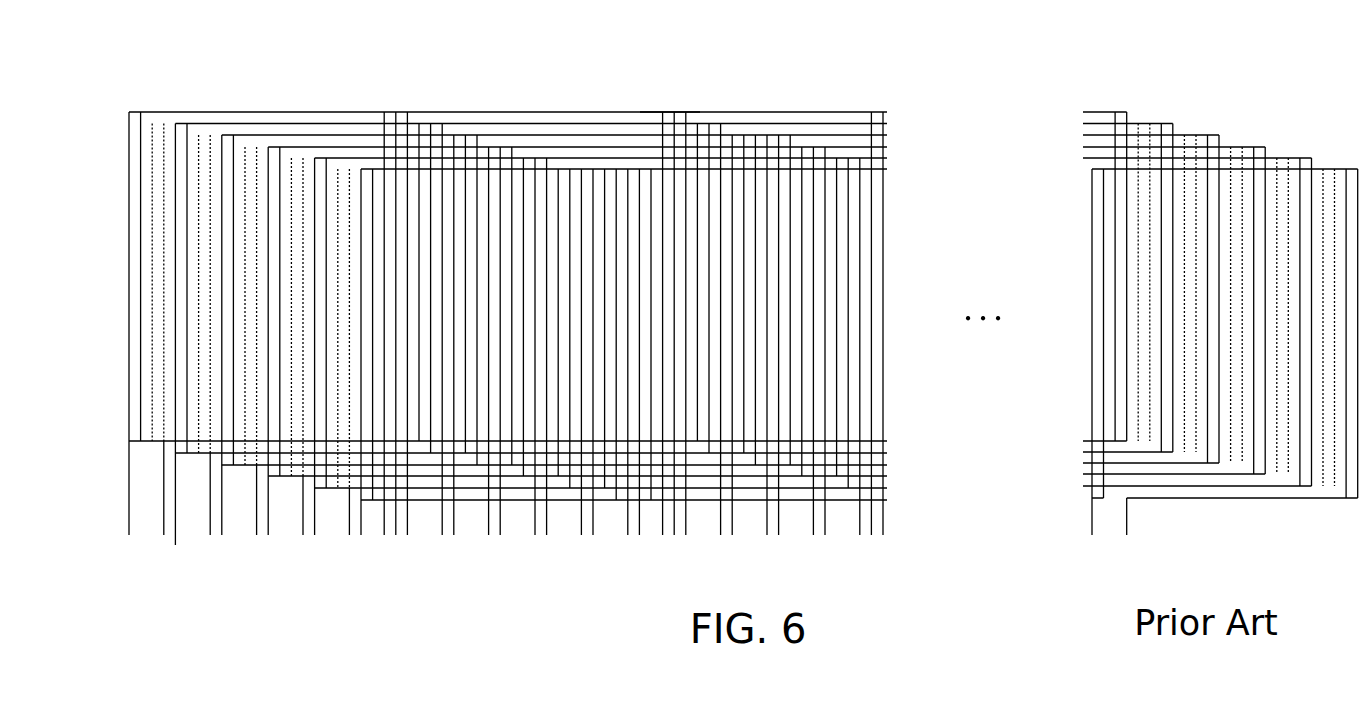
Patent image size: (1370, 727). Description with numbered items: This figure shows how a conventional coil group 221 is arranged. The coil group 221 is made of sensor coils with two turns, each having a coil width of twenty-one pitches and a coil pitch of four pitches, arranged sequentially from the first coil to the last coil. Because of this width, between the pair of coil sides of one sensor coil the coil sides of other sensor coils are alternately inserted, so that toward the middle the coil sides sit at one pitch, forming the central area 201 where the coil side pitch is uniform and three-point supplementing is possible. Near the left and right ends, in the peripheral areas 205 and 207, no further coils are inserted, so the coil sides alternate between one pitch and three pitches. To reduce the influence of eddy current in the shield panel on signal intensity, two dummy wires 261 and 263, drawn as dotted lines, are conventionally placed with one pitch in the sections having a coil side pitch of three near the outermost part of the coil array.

The peripheral area 205 is at (129, 49).
The central area 201 is at (1127, 49).
The peripheral area 207 is at (1360, 49).
The dummy wire 261 is at (153, 110).
The dummy wire 263 is at (180, 110).
The coil group 221 is at (655, 99).